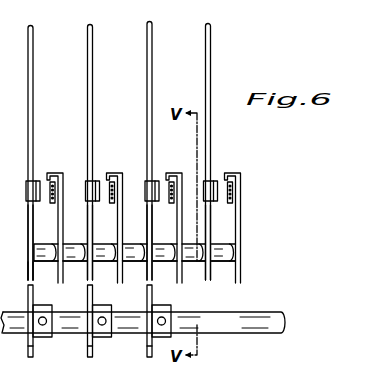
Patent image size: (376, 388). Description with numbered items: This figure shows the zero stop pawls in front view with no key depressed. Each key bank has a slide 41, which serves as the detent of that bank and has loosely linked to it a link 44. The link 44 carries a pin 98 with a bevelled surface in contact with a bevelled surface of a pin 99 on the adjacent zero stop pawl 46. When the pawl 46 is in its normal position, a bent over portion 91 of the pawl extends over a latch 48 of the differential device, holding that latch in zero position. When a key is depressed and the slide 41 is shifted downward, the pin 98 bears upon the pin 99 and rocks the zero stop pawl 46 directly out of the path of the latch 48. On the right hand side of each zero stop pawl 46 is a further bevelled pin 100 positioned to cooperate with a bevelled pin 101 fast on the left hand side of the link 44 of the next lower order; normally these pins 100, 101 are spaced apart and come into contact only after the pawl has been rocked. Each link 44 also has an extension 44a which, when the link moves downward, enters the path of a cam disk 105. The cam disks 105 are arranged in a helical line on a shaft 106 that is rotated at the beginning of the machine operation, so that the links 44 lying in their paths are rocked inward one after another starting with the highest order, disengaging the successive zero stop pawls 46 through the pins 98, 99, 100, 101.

The slide 41 is at (88, 77).
The link 44 is at (28, 222).
The extension 44a is at (30, 267).
The zero stop pawl 46 is at (61, 218).
The latch 48 is at (36, 181).
The bent over portion 91 is at (49, 175).
The pin 98 is at (38, 244).
The pin 99 is at (38, 262).
The pin 100 is at (63, 246).
The pin 101 is at (65, 262).
The cam disk 105 is at (150, 357).
The shaft 106 is at (222, 321).